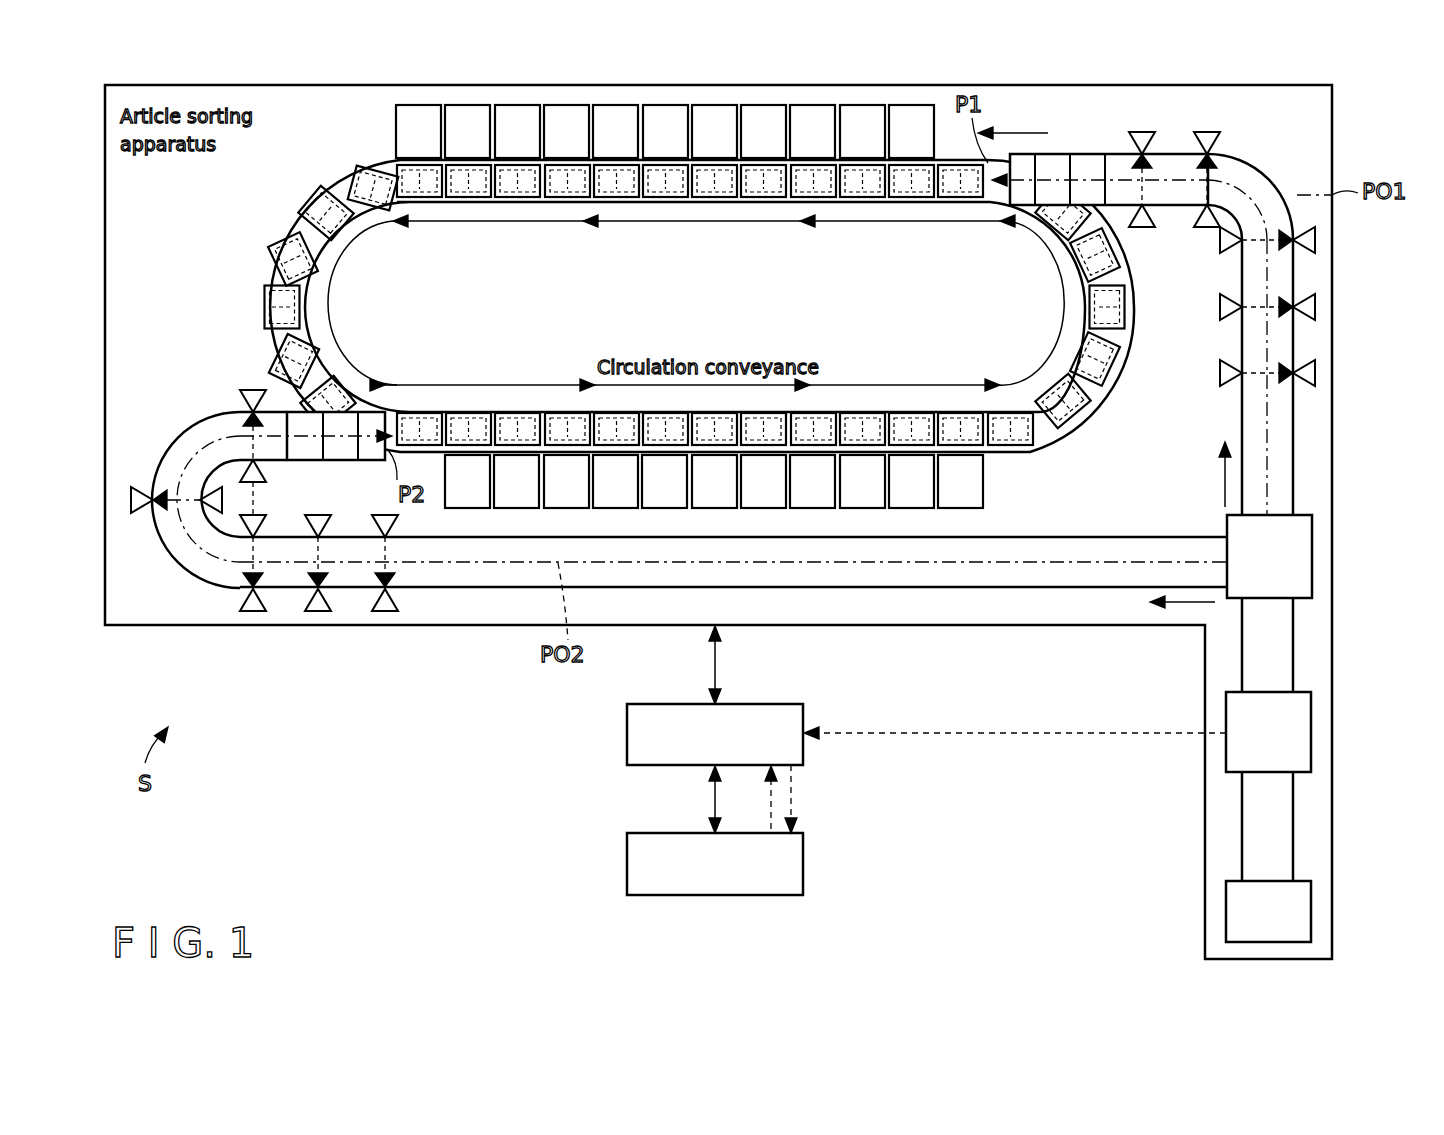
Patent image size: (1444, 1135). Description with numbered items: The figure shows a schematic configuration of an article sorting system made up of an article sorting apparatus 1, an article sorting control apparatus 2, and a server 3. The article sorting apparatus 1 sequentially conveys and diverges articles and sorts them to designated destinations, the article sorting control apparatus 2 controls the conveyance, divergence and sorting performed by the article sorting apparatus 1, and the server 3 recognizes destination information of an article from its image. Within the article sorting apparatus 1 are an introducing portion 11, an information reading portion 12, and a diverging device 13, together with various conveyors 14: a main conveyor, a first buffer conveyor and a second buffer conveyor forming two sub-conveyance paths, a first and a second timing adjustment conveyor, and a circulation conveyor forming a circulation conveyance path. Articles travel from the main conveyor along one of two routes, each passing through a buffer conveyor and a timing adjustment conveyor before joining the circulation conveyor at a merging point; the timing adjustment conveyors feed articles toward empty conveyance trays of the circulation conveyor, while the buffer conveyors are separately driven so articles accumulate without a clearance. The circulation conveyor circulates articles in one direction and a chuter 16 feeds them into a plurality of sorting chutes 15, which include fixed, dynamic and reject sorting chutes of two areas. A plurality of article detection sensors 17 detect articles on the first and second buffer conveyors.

The article sorting apparatus 1 is at (1332, 110).
The article sorting control apparatus 2 is at (805, 713).
The server 3 is at (805, 863).
The introducing portion 11 is at (1313, 912).
The information reading portion 12 is at (1313, 733).
The diverging device 13 is at (1313, 557).
The conveyor 14 is at (1058, 154).
The sorting chute 15 is at (1005, 484).
The chuter 16 is at (300, 193).
The article detection sensor 17 is at (1142, 131).